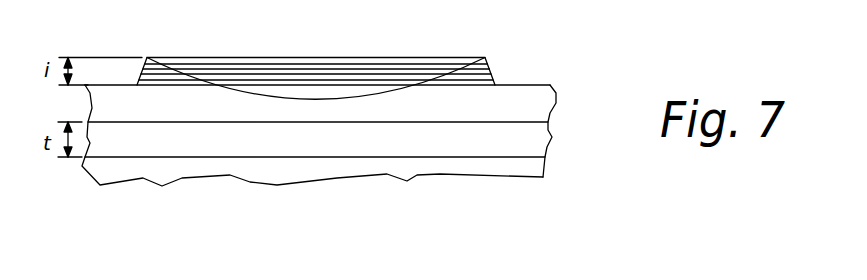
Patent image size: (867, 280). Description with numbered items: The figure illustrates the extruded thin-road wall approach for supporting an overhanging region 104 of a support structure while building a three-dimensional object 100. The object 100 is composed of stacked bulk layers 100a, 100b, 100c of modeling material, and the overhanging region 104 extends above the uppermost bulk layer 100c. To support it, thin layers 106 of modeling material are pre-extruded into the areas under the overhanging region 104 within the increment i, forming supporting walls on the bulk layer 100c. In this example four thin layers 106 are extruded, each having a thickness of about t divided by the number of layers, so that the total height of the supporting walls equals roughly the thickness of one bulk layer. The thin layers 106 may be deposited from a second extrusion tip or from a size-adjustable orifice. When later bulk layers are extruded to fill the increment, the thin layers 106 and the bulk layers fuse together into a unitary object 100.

The object 100 is at (354, 143).
The bulk layer 100a is at (483, 168).
The bulk layer 100b is at (530, 134).
The bulk layer 100c is at (528, 107).
The overhanging region 104 is at (358, 77).
The thin layers 106 is at (147, 82).